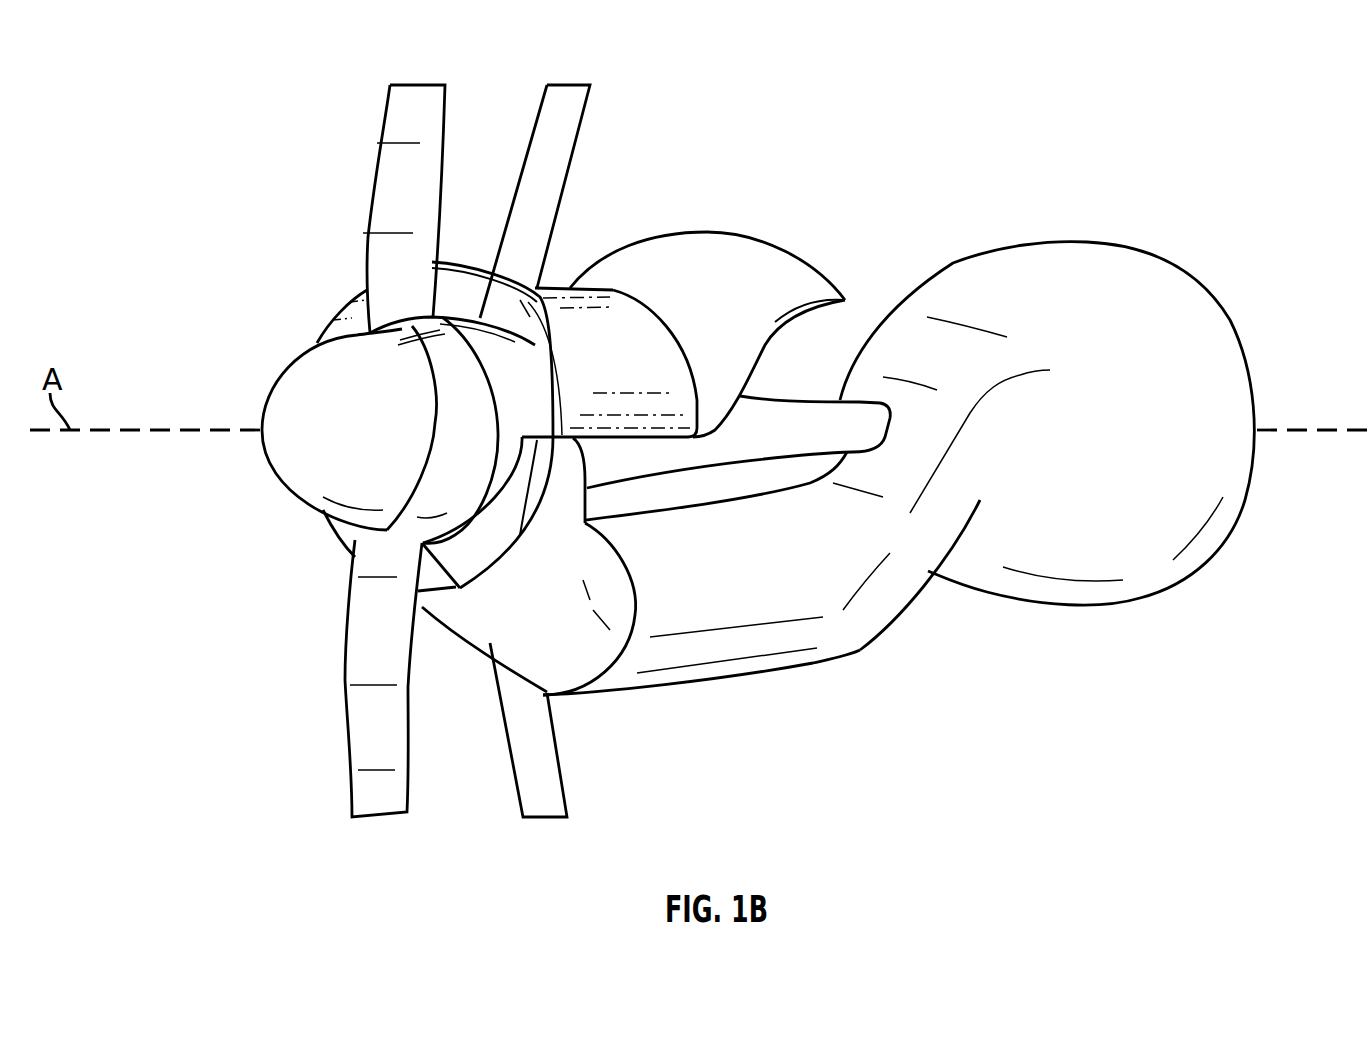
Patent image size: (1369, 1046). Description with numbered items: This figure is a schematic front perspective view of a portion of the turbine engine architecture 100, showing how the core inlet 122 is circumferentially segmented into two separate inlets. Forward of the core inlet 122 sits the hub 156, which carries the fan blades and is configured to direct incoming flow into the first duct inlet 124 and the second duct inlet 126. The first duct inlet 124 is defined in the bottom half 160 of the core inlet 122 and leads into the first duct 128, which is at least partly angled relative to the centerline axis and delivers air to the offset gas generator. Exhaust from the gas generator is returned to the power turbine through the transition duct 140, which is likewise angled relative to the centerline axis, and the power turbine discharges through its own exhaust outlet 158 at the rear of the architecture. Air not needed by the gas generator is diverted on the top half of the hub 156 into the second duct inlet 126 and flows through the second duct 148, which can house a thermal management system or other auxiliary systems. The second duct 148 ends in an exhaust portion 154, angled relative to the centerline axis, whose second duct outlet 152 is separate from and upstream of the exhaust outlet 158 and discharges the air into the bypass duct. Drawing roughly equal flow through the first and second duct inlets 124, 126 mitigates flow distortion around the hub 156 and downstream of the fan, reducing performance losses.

The turbine engine architecture 100 is at (1133, 110).
The core inlet 122 is at (332, 323).
The first duct inlet 124 is at (428, 573).
The second duct inlet 126 is at (453, 293).
The first duct 128 is at (596, 648).
The transition duct 140 is at (935, 525).
The second duct 148 is at (603, 320).
The second duct outlet 152 is at (830, 295).
The exhaust portion 154 is at (730, 247).
The hub 156 is at (288, 408).
The exhaust outlet of the power turbine 158 is at (1192, 272).
The bottom half 160 is at (312, 533).